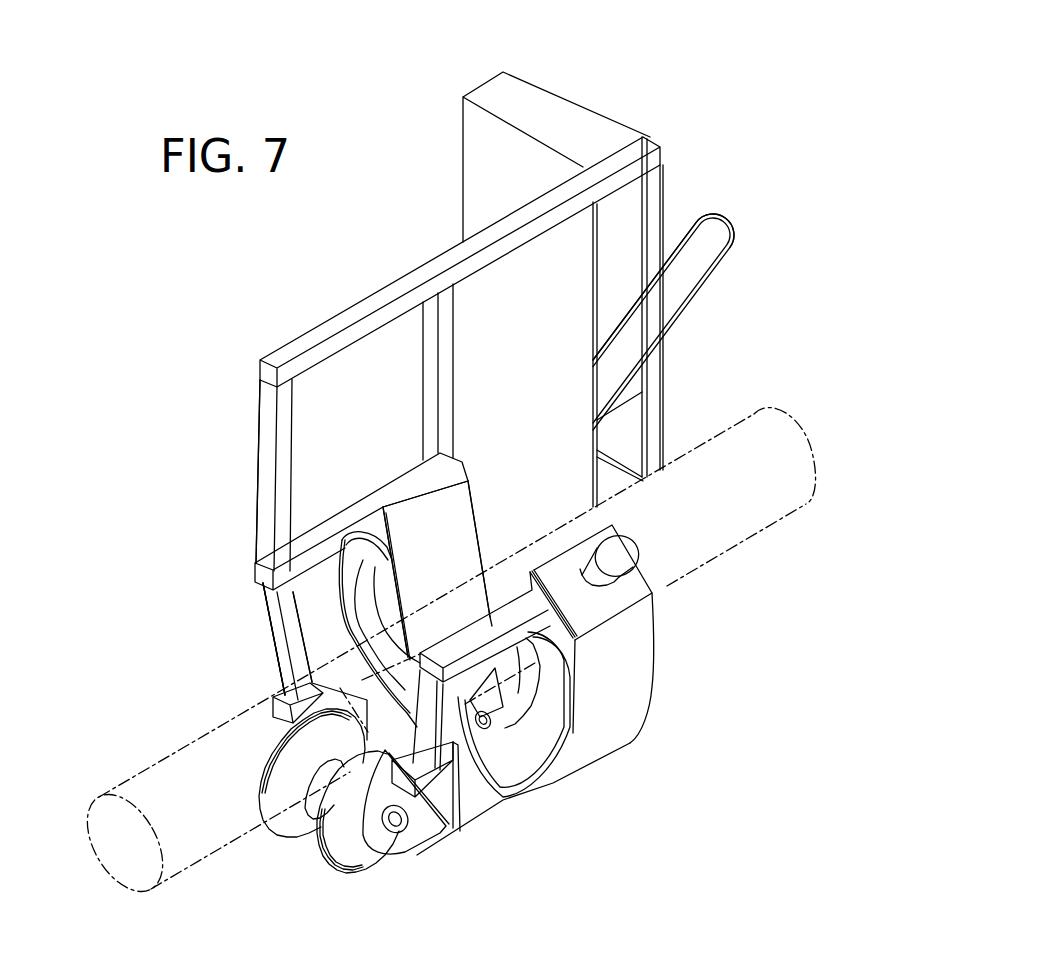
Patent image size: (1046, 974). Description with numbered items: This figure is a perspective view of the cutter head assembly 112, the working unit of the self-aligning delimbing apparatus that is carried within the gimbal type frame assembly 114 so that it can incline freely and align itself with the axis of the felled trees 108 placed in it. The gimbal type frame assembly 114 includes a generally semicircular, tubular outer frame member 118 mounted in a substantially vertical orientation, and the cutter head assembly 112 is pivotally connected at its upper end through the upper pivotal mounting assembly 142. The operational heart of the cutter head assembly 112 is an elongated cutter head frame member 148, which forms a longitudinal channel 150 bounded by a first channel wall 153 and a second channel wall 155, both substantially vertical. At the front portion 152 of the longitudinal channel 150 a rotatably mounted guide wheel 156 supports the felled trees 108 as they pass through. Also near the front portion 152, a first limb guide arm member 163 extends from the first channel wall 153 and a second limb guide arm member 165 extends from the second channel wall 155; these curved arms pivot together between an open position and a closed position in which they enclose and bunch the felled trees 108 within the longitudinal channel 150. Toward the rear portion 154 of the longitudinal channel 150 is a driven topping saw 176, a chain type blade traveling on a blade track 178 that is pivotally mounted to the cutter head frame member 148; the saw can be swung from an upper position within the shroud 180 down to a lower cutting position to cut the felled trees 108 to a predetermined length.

The felled trees 108 is at (793, 463).
The cutter head assembly 112 is at (650, 690).
The gimbal type frame assembly 114 is at (203, 412).
The outer frame member 118 is at (218, 468).
The upper pivotal mounting assembly 142 is at (593, 547).
The cutter head frame member 148 is at (382, 295).
The longitudinal channel 150 is at (498, 588).
The front portion 152 is at (236, 639).
The first channel wall 153 is at (448, 528).
The rear portion 154 is at (470, 500).
The second channel wall 155 is at (478, 730).
The guide wheel 156 is at (370, 863).
The first limb guide arm member 163 is at (541, 740).
The second limb guide arm member 165 is at (347, 588).
The topping saw 176 is at (737, 231).
The blade track 178 is at (688, 282).
The shroud 180 is at (555, 115).